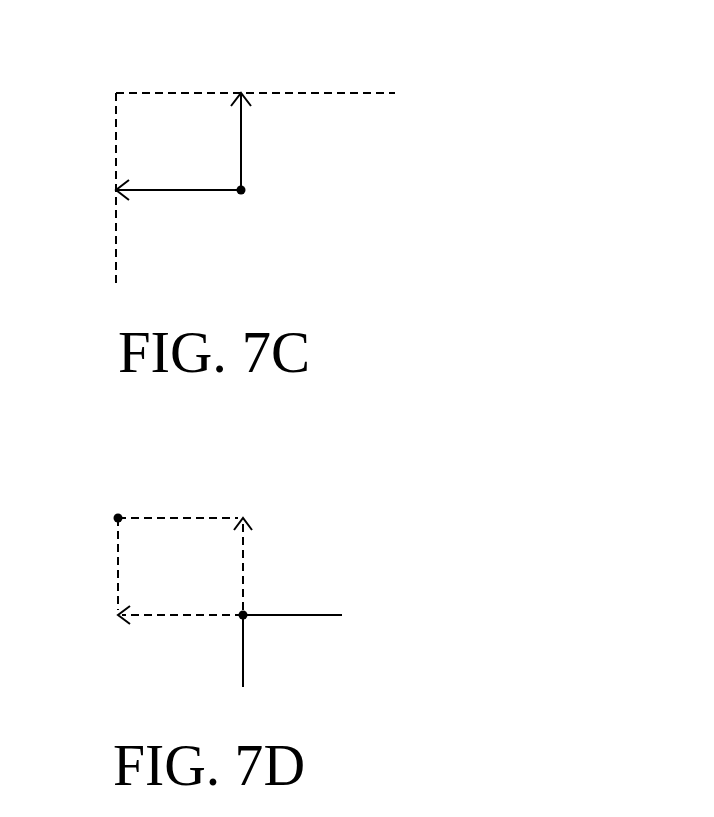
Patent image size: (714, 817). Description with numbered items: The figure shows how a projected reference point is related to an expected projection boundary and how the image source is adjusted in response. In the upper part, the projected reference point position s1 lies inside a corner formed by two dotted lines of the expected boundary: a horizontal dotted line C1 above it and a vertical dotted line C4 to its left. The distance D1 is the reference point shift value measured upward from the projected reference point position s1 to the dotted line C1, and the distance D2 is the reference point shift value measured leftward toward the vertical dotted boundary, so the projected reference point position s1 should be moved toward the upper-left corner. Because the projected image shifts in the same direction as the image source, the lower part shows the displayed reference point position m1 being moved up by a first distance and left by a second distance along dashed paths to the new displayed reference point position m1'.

In FIG. 7C, the dotted line of expected boundary C1 is at (326, 89).
In FIG. 7C, the dotted line of expected boundary C4 is at (112, 230).
In FIG. 7C, the distance (reference point shift value) D1 is at (246, 133).
In FIG. 7C, the distance (reference point shift value) D2 is at (176, 195).
In FIG. 7C, the projected reference point position s1 is at (247, 191).
In FIG. 7D, the displayed reference point position m1 is at (291, 626).
In FIG. 7D, the displayed reference point position (after adjustment) m1' is at (178, 544).